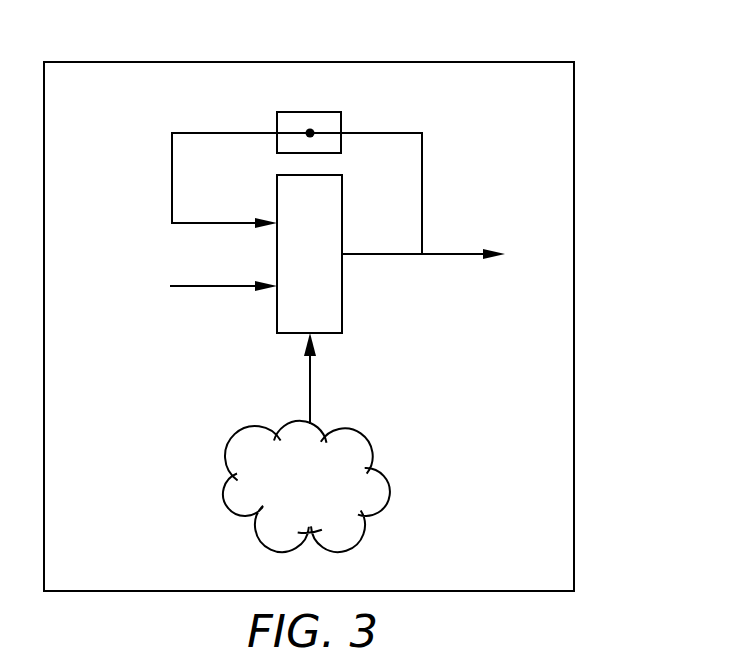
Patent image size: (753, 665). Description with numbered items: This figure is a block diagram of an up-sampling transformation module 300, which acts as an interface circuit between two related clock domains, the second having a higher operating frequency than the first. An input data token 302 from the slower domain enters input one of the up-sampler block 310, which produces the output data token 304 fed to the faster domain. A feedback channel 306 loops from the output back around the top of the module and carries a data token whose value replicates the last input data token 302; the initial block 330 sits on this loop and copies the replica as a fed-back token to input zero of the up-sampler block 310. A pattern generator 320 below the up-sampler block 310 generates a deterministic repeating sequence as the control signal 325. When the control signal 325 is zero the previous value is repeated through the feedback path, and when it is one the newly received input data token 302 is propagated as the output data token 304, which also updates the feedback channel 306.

The up-sampling transformation module 300 is at (582, 40).
The input data token 302 is at (200, 284).
The output data token 304 is at (470, 253).
The feedback channel 306 is at (422, 192).
The up-sampler block 310 is at (342, 321).
The pattern generator 320 is at (358, 432).
The control signal 325 is at (309, 377).
The initial block 330 is at (323, 112).